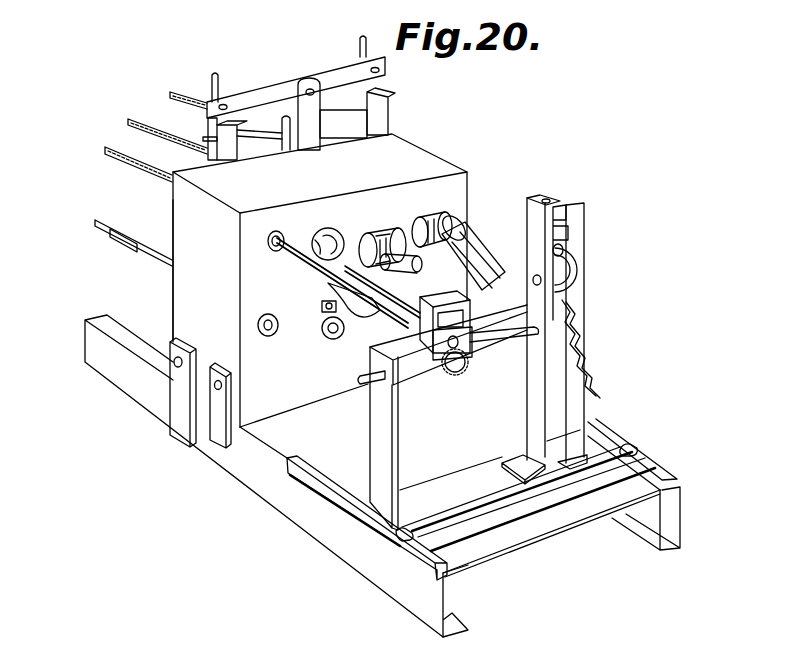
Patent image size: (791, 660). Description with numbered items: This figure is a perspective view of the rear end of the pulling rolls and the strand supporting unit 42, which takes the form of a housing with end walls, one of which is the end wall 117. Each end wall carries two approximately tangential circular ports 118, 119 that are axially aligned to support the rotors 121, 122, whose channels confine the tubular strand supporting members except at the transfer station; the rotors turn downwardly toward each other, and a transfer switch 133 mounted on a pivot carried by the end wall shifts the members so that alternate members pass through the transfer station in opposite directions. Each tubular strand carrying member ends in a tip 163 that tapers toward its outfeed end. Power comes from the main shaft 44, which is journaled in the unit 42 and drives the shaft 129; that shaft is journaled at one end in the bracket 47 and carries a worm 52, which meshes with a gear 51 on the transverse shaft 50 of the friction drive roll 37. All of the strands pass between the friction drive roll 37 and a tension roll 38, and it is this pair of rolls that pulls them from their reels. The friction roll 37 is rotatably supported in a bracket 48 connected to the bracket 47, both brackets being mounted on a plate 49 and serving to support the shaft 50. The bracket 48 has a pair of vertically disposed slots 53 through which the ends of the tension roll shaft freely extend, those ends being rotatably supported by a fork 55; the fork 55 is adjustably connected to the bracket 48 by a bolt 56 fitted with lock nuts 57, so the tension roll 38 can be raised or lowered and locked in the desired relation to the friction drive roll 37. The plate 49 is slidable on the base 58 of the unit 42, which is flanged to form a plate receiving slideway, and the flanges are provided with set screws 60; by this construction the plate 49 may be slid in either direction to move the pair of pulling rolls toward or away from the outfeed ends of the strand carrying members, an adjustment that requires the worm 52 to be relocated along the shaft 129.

The unit 42 is at (430, 155).
The end wall 117 is at (250, 250).
The main shaft 44 is at (150, 258).
The shaft 129 is at (308, 262).
The rotor 121 is at (348, 218).
The circular port 118 is at (326, 240).
The circular port 119 is at (380, 232).
The rotor 122 is at (420, 217).
The tip 163 is at (472, 254).
The transfer switch 133 is at (358, 314).
The worm 52 is at (418, 331).
The bracket 47 is at (432, 340).
The gear 51 is at (452, 365).
The transverse shaft 50 is at (500, 345).
The bracket 48 is at (535, 355).
The friction drive roll 37 is at (552, 367).
The bolt 56 is at (548, 202).
The fork 55 is at (571, 216).
The lock nuts 57 is at (564, 212).
The vertically disposed slots 53 is at (562, 248).
The tension roll 38 is at (566, 278).
The set screws 60 is at (395, 537).
The base 58 is at (557, 518).
The plate 49 is at (490, 492).